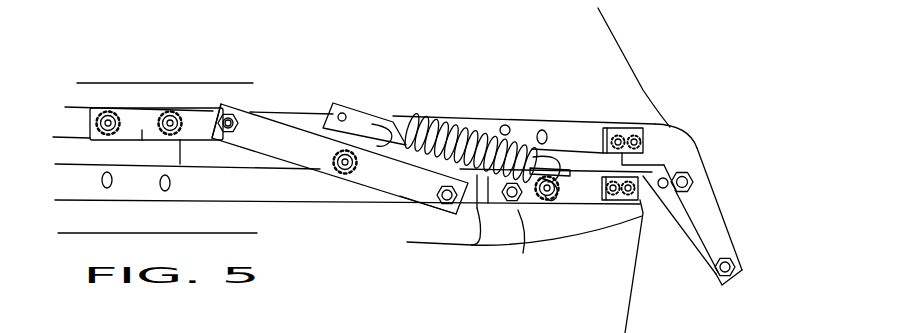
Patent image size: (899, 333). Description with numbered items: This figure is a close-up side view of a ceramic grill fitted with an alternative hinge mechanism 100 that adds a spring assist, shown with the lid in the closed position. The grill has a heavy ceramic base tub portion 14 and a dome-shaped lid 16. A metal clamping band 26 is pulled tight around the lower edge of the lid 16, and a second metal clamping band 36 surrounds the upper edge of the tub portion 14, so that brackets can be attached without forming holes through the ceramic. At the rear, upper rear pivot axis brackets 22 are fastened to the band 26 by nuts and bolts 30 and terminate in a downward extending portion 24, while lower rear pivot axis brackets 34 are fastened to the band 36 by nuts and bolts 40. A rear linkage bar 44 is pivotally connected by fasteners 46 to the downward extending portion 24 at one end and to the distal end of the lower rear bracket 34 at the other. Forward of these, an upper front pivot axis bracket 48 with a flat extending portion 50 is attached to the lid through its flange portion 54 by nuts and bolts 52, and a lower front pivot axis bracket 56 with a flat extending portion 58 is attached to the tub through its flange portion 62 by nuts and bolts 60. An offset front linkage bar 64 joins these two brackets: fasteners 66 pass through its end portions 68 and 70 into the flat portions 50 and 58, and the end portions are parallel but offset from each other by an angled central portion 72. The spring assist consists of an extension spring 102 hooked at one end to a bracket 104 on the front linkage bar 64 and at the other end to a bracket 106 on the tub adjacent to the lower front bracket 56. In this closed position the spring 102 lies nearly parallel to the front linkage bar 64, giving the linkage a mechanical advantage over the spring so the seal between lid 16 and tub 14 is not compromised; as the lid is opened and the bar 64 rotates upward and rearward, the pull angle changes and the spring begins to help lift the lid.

The base tub portion 14 is at (633, 312).
The lid 16 is at (627, 57).
The upper rear pivot axis brackets 22 is at (675, 143).
The downward extending portion 24 is at (692, 162).
The metal clamping band 26 is at (70, 118).
The nuts and bolts 30 is at (617, 128).
The lower rear pivot axis brackets 34 is at (678, 233).
The metal clamping band 36 is at (250, 193).
The nuts and bolts 40 is at (618, 200).
The rear linkage bar 44 is at (723, 227).
The fasteners 46 is at (703, 180).
The upper front pivot axis brackets 48 is at (133, 113).
The flat extending portion 50 is at (248, 112).
The nuts and bolts 52 is at (110, 132).
The flange portion 54 is at (143, 141).
The lower front pivot axis brackets 56 is at (523, 253).
The flat extending portion 58 is at (464, 248).
The nuts and bolts 60 is at (548, 200).
The flange portion 62 is at (513, 205).
The offset front linkage bar 64 is at (387, 200).
The fasteners 66 is at (250, 128).
The end portion 68 is at (250, 125).
The end portion 70 is at (430, 207).
The central portion 72 is at (372, 173).
The hinge mechanism 100 is at (797, 196).
The extension spring 102 is at (453, 122).
The bracket 104 is at (360, 118).
The bracket 106 is at (565, 168).